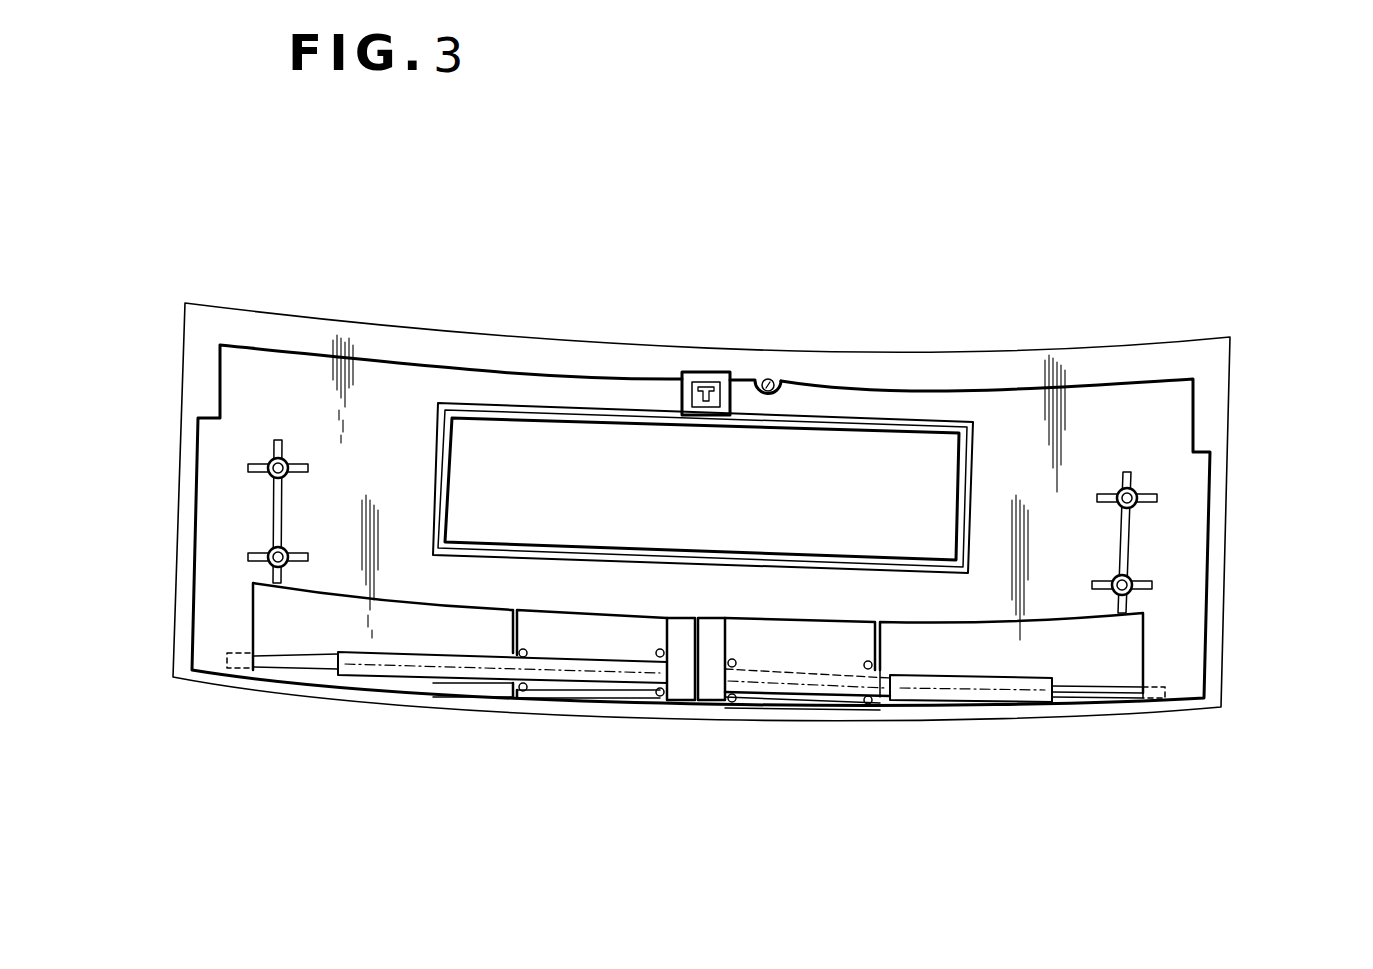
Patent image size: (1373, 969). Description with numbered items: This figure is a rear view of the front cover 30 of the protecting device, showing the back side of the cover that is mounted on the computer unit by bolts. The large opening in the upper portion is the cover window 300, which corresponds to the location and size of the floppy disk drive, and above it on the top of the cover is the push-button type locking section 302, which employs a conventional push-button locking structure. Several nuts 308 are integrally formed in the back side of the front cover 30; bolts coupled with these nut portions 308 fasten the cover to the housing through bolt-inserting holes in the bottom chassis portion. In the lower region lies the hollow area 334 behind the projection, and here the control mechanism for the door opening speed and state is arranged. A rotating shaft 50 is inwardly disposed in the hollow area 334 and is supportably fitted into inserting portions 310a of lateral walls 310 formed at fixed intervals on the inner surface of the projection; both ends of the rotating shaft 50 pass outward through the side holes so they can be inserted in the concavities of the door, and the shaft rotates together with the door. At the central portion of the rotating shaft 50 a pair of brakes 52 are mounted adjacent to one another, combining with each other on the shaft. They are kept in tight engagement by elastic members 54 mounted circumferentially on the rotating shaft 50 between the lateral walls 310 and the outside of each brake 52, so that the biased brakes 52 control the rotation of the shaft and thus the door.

The front cover 30 is at (422, 323).
The cover window 300 is at (554, 433).
The push-button type locking section 302 is at (708, 380).
The nuts 308 is at (768, 380).
The lateral walls 310 is at (510, 637).
The inserting portions 310a is at (560, 636).
The hollow area 334 is at (1070, 658).
The rotating shaft 50 is at (787, 680).
The brakes 52 is at (709, 700).
The elastic members 54 is at (653, 697).